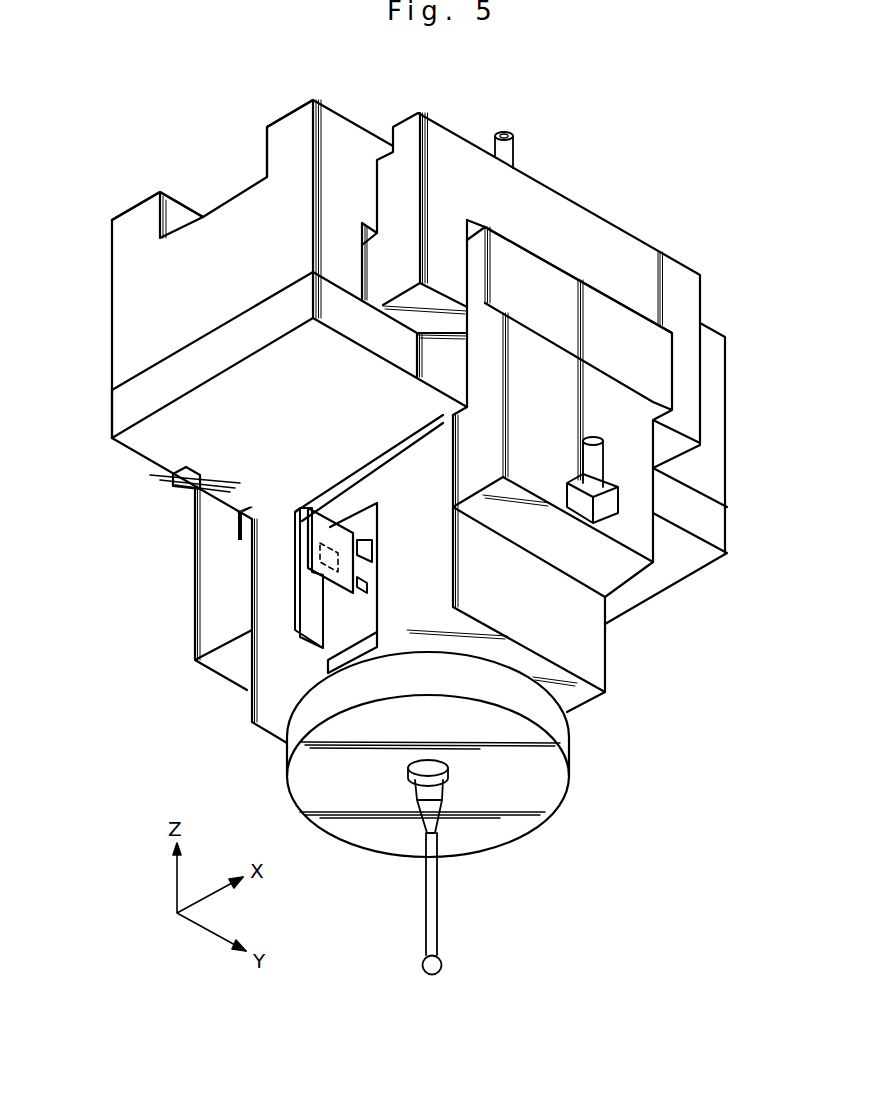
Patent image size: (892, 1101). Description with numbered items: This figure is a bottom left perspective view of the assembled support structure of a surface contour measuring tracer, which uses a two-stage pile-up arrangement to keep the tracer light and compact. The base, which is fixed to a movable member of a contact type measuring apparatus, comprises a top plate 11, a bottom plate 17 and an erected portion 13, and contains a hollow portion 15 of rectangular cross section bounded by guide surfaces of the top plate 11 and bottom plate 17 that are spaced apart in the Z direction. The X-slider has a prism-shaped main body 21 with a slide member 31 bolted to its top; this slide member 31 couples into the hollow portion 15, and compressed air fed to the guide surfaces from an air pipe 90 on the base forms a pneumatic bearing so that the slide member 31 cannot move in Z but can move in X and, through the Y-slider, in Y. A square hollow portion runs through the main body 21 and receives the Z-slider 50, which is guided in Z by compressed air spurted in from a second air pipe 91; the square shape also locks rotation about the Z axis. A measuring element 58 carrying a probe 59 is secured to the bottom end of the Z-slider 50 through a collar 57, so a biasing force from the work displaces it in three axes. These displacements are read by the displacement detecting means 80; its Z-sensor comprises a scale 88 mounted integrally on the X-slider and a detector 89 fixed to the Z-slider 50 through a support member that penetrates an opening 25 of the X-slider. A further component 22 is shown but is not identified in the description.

The top plate 11 is at (185, 290).
The erected portion 13 is at (290, 127).
The hollow portion 15 is at (372, 270).
The bottom plate 17 is at (123, 407).
The main body 21 is at (638, 565).
The left column 22 is at (240, 530).
The opening 25 is at (363, 520).
The slide member 31 is at (660, 370).
The Z-slider 50 is at (362, 565).
The collar 57 is at (548, 790).
The measuring element 58 is at (432, 885).
The probe 59 is at (442, 963).
The displacement detecting means 80 is at (280, 458).
The scale 88 is at (298, 563).
The detector 89 is at (323, 543).
The air pipe 90 is at (515, 150).
The air pipe 91 is at (605, 458).